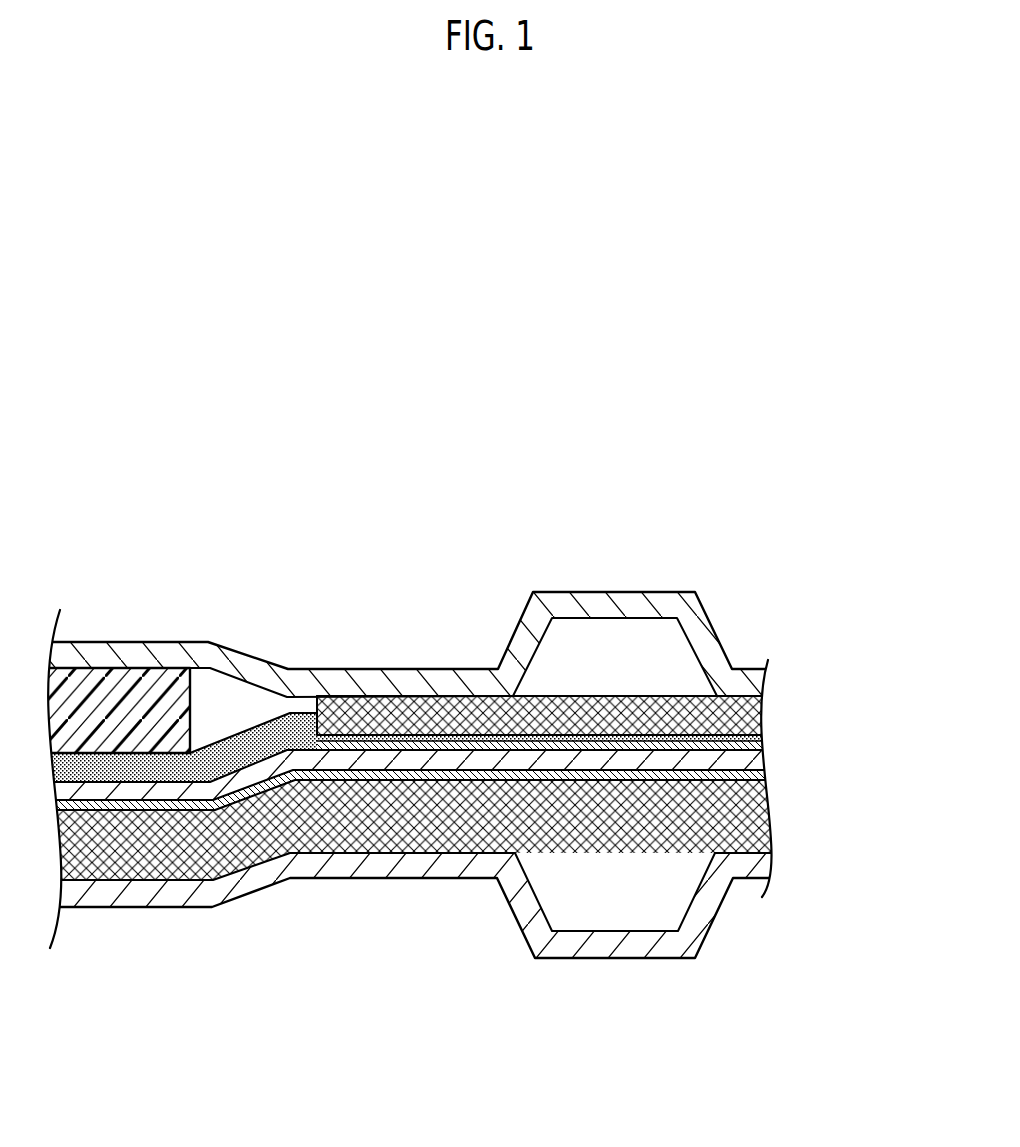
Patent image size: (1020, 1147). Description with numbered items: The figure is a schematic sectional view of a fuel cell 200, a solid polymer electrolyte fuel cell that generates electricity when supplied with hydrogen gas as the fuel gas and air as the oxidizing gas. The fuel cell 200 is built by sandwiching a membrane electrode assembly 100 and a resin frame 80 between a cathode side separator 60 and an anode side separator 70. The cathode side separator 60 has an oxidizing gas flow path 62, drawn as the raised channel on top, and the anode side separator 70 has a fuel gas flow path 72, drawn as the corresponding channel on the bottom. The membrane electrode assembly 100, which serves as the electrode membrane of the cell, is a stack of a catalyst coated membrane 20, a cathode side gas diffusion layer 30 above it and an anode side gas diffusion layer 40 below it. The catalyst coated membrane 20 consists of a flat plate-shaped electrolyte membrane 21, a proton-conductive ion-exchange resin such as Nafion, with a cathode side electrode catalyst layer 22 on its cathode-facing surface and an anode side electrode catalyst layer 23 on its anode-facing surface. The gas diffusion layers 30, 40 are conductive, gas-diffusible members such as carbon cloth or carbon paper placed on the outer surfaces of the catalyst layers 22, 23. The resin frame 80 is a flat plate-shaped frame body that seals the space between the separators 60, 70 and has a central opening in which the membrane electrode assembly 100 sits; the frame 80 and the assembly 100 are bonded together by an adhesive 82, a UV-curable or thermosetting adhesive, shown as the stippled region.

The fuel cell 200 is at (713, 542).
The membrane electrode assembly 100 is at (902, 665).
The catalyst coated membrane 20 is at (847, 708).
The electrolyte membrane 21 is at (757, 767).
The cathode side electrode catalyst layer 22 is at (757, 748).
The anode side electrode catalyst layer 23 is at (760, 778).
The cathode side gas diffusion layer 30 is at (757, 708).
The anode side gas diffusion layer 40 is at (768, 826).
The cathode side separator 60 is at (715, 635).
The oxidizing gas flow path 62 is at (618, 619).
The anode side separator 70 is at (715, 915).
The fuel gas flow path 72 is at (587, 931).
The resin frame 80 is at (140, 688).
The adhesive 82 is at (242, 747).